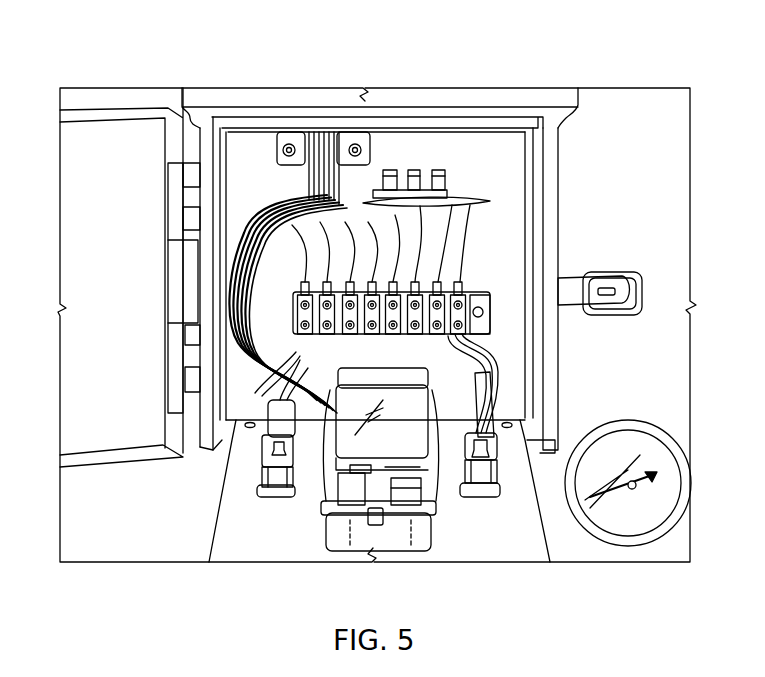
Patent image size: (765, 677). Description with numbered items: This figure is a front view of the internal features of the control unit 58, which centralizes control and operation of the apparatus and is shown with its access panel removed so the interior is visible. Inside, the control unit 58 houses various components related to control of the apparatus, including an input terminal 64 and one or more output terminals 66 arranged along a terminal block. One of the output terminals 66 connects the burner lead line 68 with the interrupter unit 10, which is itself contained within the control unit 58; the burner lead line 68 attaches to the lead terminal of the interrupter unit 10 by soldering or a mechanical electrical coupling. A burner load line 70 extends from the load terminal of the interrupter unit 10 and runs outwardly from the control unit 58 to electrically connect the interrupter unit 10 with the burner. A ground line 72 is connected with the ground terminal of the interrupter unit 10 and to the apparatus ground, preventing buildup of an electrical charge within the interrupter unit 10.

The interrupter unit 10 is at (270, 143).
The control unit 58 is at (562, 183).
The input terminal 64 is at (490, 332).
The output terminals 66 is at (455, 284).
The burner lead line 68 is at (297, 131).
The burner load line 70 is at (322, 132).
The ground line 72 is at (342, 137).